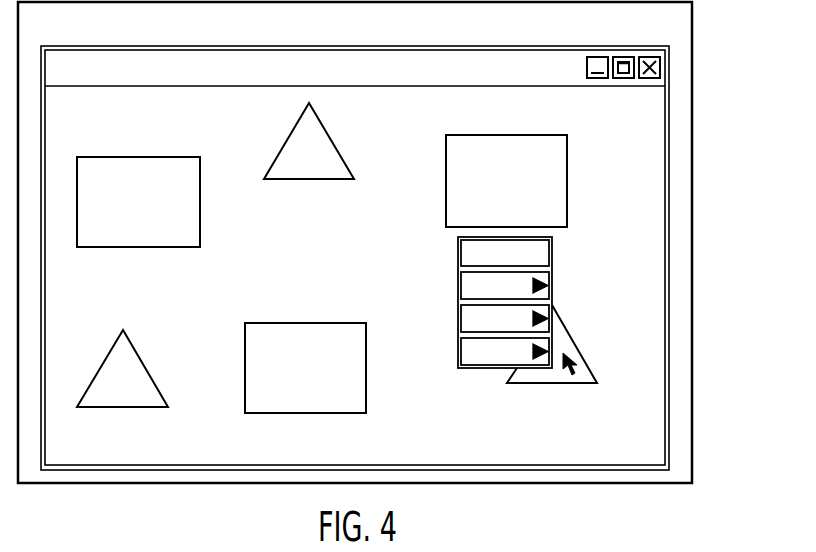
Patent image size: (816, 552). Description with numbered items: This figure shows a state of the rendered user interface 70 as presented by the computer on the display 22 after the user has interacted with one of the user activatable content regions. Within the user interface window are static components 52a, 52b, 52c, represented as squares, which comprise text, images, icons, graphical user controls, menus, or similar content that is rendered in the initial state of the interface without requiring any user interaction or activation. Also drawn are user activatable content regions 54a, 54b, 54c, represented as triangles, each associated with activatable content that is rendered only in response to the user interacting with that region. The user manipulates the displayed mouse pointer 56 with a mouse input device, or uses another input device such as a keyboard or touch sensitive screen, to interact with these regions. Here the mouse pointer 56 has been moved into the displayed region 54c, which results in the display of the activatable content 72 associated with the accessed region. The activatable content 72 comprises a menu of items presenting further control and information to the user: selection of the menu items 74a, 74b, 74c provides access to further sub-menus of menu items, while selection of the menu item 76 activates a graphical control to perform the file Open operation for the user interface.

The display 22 is at (692, 23).
The rendered user interface 70 is at (669, 146).
The static component 52a is at (200, 217).
The static component 52b is at (567, 181).
The static component 52c is at (308, 322).
The user activatable content region 54a is at (145, 368).
The user activatable content region 54b is at (332, 141).
The user activatable content region 54c is at (557, 320).
The activatable content 72 is at (511, 302).
The menu item 76 is at (458, 251).
The menu item 74a is at (458, 285).
The menu item 74b is at (458, 318).
The menu item 74c is at (458, 351).
The mouse pointer 56 is at (575, 369).